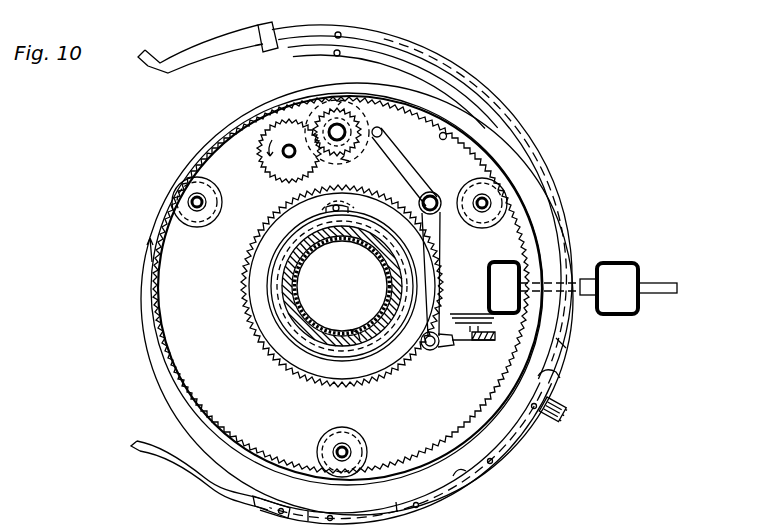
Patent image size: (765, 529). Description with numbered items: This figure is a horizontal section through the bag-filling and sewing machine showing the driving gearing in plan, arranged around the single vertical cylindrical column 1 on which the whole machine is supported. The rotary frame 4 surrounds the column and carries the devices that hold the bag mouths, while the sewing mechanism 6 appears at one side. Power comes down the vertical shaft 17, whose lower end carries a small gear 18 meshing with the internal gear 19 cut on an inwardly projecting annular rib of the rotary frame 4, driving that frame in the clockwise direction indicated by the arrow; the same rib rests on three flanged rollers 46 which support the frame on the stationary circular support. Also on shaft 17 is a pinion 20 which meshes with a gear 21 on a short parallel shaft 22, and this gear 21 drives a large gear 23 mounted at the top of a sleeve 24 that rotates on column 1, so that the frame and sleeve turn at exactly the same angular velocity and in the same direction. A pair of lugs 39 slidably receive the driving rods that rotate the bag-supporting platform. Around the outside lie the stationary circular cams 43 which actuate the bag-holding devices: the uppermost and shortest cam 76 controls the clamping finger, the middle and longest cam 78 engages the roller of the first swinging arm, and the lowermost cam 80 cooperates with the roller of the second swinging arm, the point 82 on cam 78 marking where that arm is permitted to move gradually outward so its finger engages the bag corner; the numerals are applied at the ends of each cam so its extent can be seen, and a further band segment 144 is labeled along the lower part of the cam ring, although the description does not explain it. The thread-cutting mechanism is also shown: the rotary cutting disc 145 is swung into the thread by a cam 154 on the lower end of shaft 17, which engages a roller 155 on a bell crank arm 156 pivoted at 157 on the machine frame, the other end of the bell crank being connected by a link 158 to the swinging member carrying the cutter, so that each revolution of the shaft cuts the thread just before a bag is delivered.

The vertical cylindrical column 1 is at (388, 272).
The rotary frame 4 is at (540, 218).
The sewing mechanism 6 is at (618, 263).
The vertical shaft 17 is at (333, 128).
The small gear 18 is at (380, 130).
The internal gear 19 is at (444, 138).
The pinion 20 is at (364, 101).
The gear 21 is at (262, 157).
The short parallel shaft 22 is at (286, 157).
The large gear 23 is at (294, 380).
The sleeve 24 is at (263, 378).
The lugs 39 is at (350, 207).
The circular cams 43 is at (394, 32).
The flanged rollers 46 is at (190, 201).
The cam 76 is at (551, 375).
The cam 78 is at (264, 27).
The cam 80 is at (151, 68).
The point on cam 82 is at (222, 483).
The band segment 144 is at (406, 456).
The rotary cutting disc 145 is at (477, 303).
The cam 154 is at (358, 172).
The roller 155 is at (394, 124).
The bell crank arm 156 is at (400, 158).
The pivot 157 is at (440, 175).
The link 158 is at (442, 351).